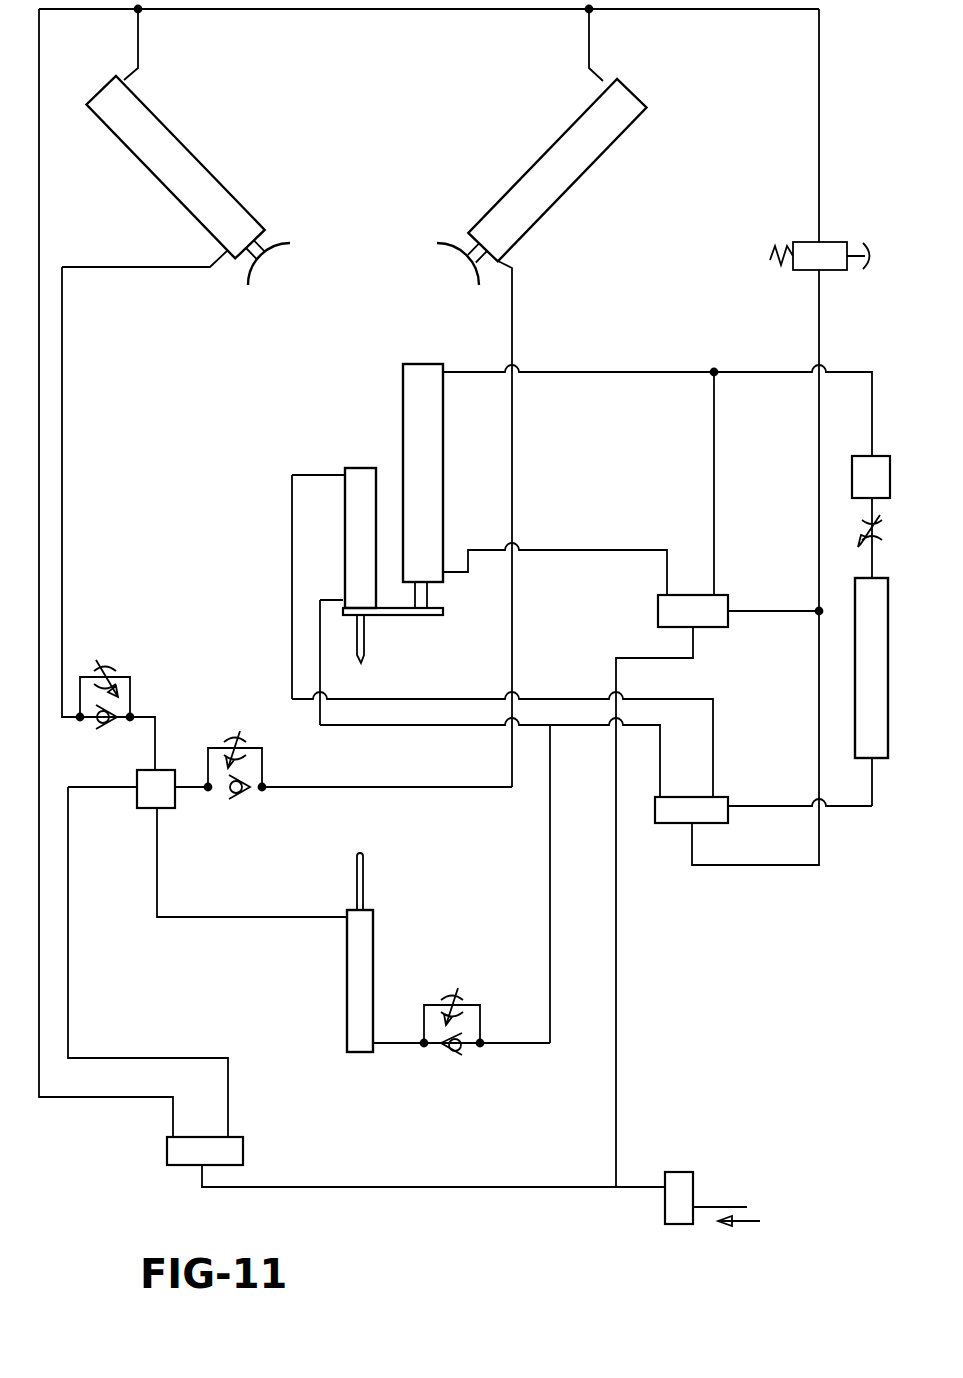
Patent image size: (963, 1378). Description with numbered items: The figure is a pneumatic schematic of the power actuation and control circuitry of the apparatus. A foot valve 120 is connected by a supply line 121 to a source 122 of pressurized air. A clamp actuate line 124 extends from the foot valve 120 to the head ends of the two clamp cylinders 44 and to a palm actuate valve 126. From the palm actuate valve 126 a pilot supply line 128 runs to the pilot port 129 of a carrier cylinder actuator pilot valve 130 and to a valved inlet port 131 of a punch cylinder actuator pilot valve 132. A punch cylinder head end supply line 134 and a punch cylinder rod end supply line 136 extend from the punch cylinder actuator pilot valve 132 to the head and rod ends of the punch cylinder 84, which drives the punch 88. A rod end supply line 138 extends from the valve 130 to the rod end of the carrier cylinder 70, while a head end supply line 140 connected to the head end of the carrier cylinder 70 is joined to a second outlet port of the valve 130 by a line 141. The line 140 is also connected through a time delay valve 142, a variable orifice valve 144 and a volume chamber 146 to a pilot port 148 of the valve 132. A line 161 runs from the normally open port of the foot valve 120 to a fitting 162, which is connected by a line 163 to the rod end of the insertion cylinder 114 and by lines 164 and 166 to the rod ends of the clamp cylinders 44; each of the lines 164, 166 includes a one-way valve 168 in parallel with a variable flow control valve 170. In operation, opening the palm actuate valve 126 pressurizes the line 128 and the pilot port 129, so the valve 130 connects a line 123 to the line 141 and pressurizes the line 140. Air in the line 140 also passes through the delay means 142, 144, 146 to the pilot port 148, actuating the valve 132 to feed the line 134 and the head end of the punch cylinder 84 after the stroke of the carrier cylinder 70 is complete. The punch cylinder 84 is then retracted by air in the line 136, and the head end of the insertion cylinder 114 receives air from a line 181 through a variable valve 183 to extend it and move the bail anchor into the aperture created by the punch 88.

The clamp cylinder 44 is at (190, 153).
The line 164 is at (112, 268).
The palm actuate valve 126 is at (808, 245).
The head end supply line 140 is at (548, 370).
The carrier cylinder 70 is at (403, 414).
The punch 88 is at (368, 641).
The punch cylinder 84 is at (346, 532).
The rod end supply line 138 is at (548, 548).
The line 141 is at (712, 446).
The pilot supply line 128 is at (817, 468).
The time delay valve 142 is at (890, 468).
The variable orifice valve 144 is at (878, 528).
The volume chamber 146 is at (878, 738).
The carrier cylinder actuator pilot valve 130 is at (666, 612).
The pilot port 129 is at (732, 610).
The line 123 is at (618, 1040).
The punch cylinder head end supply line 134 is at (405, 697).
The punch cylinder rod end supply line 136 is at (372, 727).
The line 181 is at (548, 912).
The punch cylinder actuator pilot valve 132 is at (676, 842).
The valved inlet port 131 is at (690, 830).
The pilot port 148 is at (732, 800).
The variable flow control valve 170 is at (112, 668).
The one-way valve 168 is at (118, 752).
The fitting 162 is at (180, 808).
The line 166 is at (350, 790).
The line 163 is at (190, 916).
The insertion cylinder 114 is at (348, 980).
The variable valve 183 is at (440, 990).
The line 161 is at (138, 1047).
The clamp actuate line 124 is at (39, 1097).
The foot valve 120 is at (167, 1150).
The supply line 121 is at (428, 1186).
The source of pressurized air 122 is at (678, 1172).